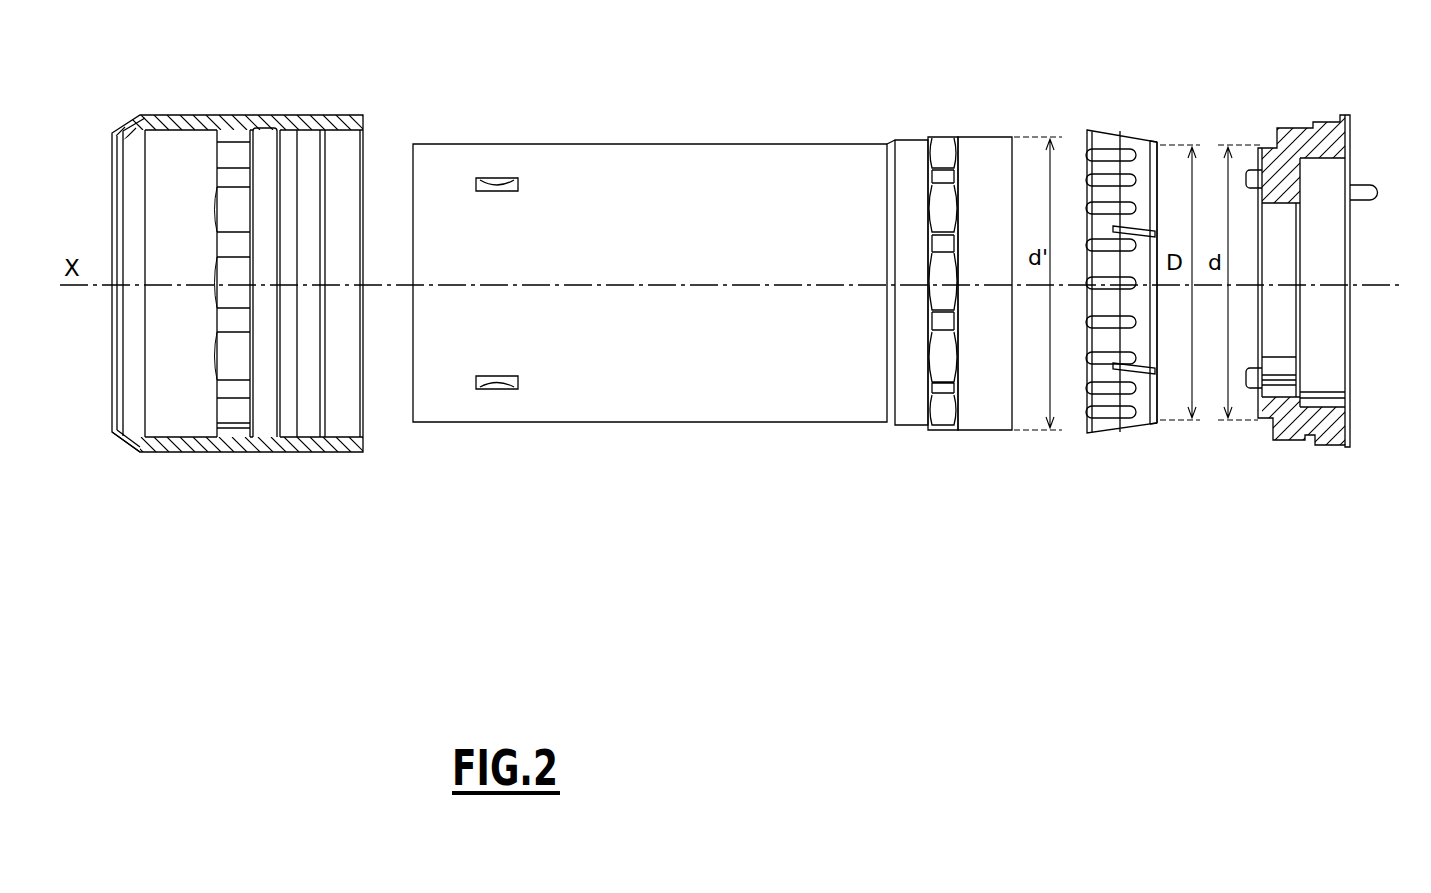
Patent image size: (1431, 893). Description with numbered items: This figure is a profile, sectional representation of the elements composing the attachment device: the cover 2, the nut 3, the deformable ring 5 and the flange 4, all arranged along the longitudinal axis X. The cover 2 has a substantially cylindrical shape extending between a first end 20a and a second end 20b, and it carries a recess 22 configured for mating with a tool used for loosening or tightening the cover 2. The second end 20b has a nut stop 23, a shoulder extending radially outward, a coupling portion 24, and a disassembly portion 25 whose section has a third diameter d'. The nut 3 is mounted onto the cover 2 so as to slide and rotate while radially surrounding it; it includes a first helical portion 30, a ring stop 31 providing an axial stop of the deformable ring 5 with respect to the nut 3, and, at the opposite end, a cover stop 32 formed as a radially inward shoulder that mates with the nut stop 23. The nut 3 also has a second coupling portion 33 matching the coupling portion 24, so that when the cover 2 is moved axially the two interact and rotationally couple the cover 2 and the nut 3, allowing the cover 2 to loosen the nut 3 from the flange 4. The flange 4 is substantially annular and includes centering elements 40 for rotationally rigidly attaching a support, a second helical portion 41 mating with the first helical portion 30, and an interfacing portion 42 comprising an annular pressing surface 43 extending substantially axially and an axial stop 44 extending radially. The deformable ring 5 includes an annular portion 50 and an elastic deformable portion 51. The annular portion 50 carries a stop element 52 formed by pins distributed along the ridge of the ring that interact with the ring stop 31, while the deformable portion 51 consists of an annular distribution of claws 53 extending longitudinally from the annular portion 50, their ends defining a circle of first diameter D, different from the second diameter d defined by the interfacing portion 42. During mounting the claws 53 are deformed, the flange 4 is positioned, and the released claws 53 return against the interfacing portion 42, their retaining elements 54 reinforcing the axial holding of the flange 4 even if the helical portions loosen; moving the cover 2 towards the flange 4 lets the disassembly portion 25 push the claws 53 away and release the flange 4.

The cover 2 is at (711, 264).
The first end 20a is at (443, 93).
The second end 20b is at (987, 98).
The recess 22 is at (493, 390).
The nut stop 23 is at (923, 430).
The coupling portion 24 is at (948, 430).
The disassembly portion 25 is at (995, 430).
The nut 3 is at (251, 320).
The first helical portion 30 is at (340, 452).
The ring stop 31 is at (272, 452).
The cover stop 32 is at (126, 448).
The second coupling portion 33 is at (235, 438).
The flange 4 is at (1173, 301).
The centering elements 40 is at (1265, 172).
The second helical portion 41 is at (1300, 445).
The interfacing portion 42 is at (1261, 424).
The annular pressing surface 43 is at (1265, 147).
The axial stop 44 is at (1262, 148).
The deformable ring 5 is at (1110, 268).
The annular portion 50 is at (1093, 117).
The deformable portion 51 is at (1139, 128).
The stop element 52 is at (1105, 436).
The claws 53 is at (1136, 433).
The retaining element 54 is at (1150, 431).